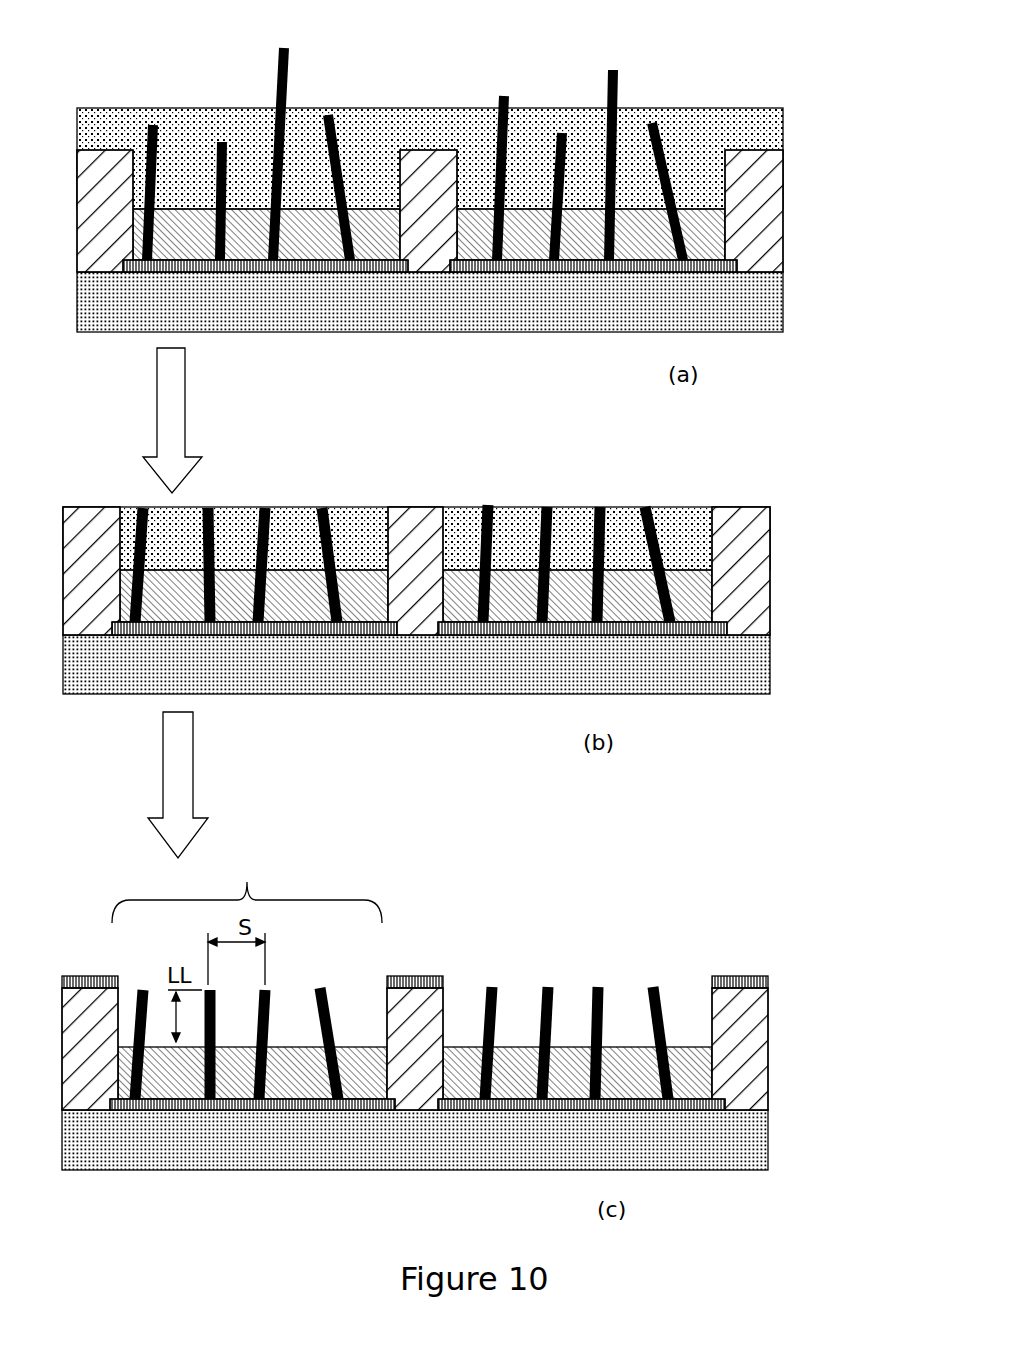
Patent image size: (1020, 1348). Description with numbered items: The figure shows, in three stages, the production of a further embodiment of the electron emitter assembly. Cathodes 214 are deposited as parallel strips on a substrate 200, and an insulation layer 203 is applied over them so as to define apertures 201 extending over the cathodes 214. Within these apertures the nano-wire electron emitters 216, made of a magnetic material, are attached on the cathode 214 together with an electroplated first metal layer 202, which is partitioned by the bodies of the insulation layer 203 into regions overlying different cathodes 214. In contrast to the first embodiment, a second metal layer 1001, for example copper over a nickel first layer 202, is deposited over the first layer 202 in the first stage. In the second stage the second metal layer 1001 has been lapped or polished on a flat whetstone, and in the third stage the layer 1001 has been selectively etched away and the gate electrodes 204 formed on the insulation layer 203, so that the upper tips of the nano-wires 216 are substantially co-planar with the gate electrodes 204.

The substrate 200 is at (377, 303).
The apertures 201 is at (247, 887).
The metal layer 202 is at (525, 220).
The insulation layer 203 is at (783, 230).
The gate electrode 204 is at (750, 968).
The cathode 214 is at (672, 267).
The nano-wire electron emitters 216 is at (663, 147).
The second metal layer 1001 is at (763, 130).